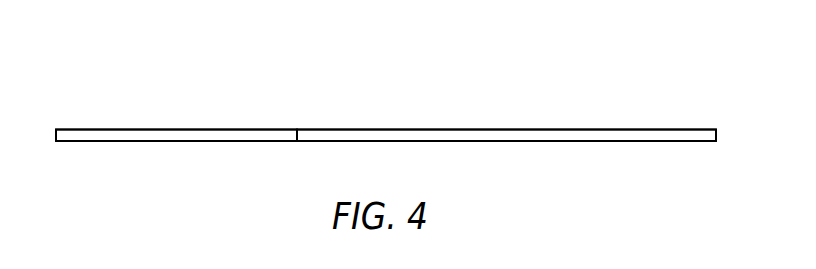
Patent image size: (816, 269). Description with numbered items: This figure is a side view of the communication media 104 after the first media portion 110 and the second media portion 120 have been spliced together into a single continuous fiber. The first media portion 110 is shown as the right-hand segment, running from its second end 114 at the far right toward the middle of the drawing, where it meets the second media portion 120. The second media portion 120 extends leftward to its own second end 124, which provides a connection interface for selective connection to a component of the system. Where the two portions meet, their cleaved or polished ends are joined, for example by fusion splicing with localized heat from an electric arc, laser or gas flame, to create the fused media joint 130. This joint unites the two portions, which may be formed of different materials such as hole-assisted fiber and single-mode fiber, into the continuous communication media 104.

The communication media 104 is at (384, 62).
The first media portion 110 is at (553, 133).
The second end 114 is at (699, 137).
The second media portion 120 is at (157, 133).
The second end 124 is at (73, 137).
The fused media joint 130 is at (297, 128).